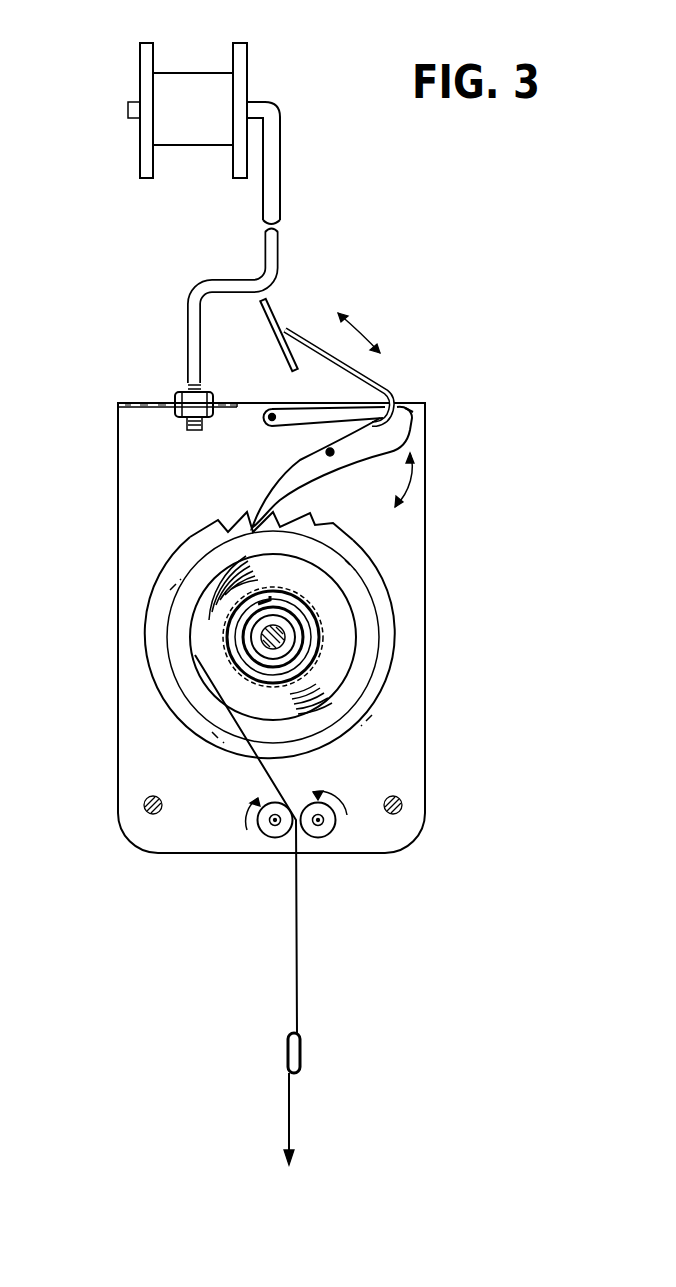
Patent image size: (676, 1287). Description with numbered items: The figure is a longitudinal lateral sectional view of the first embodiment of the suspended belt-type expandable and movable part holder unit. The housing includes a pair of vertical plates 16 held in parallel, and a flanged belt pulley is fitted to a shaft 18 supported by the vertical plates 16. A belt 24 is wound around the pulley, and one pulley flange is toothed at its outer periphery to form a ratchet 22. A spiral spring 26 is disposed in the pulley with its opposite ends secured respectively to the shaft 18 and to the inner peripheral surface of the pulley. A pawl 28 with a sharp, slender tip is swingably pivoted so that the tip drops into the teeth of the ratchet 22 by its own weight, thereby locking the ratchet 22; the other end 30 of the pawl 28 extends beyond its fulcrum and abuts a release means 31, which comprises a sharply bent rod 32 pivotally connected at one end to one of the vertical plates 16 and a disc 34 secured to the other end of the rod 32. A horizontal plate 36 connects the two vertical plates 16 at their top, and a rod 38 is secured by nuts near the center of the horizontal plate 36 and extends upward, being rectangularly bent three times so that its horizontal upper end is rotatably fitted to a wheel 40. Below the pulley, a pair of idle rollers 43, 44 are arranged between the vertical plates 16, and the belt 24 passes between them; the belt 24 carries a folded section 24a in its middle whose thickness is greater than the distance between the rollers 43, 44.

The vertical plate 16 is at (132, 742).
The shaft 18 is at (282, 640).
The ratchet 22 is at (175, 560).
The belt 24 is at (300, 915).
The folded section 24a is at (287, 1055).
The spiral spring 26 is at (222, 630).
The pawl 28 is at (355, 450).
The end of the pawl 30 is at (422, 420).
The release means 31 is at (382, 373).
The sharply bent rod 32 is at (297, 420).
The disc 34 is at (268, 312).
The horizontal plate 36 is at (145, 402).
The rod 38 is at (280, 192).
The wheel 40 is at (143, 162).
The idle roller 43 is at (276, 838).
The idle roller 44 is at (319, 838).